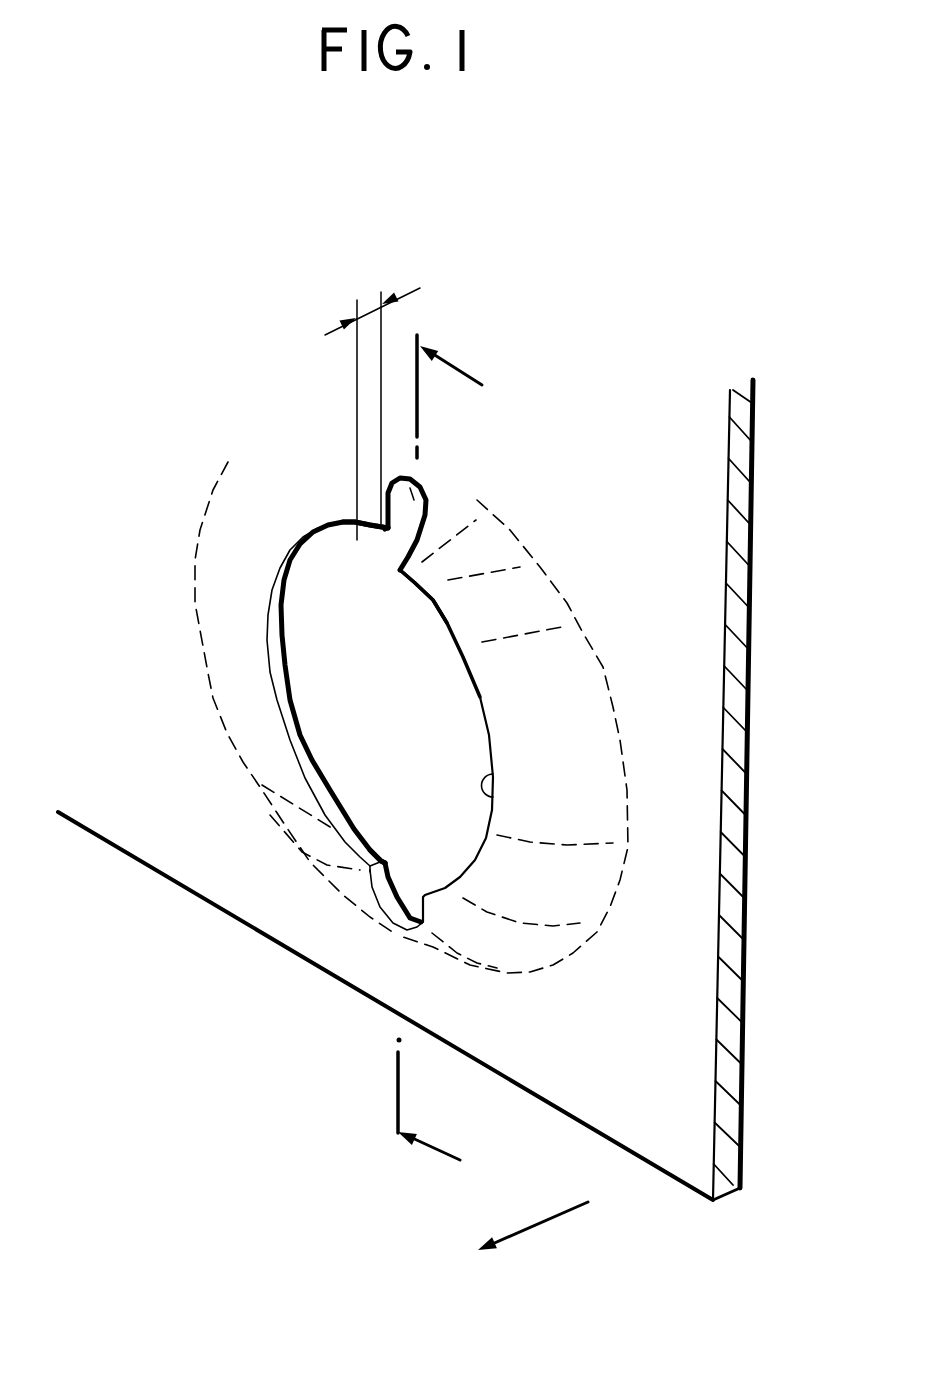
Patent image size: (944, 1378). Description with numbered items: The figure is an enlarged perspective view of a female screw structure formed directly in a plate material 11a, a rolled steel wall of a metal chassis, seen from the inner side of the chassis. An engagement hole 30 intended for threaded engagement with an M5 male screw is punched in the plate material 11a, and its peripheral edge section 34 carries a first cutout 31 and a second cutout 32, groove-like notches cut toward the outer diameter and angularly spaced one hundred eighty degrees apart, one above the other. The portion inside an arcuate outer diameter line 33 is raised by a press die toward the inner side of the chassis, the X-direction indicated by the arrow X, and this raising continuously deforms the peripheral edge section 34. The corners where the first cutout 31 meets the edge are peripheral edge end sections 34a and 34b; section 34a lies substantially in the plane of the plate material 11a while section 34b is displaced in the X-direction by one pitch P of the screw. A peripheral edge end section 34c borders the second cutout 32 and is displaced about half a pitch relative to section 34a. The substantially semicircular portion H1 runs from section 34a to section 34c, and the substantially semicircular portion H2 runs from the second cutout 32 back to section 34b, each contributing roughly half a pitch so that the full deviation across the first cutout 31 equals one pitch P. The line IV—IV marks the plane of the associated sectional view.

The plate material 11a is at (643, 1018).
The engagement hole 30 is at (445, 728).
The first cutout 31 is at (407, 493).
The second cutout 32 is at (408, 898).
The arcuate outer diameter line 33 is at (214, 694).
The peripheral edge section 34 is at (283, 648).
The peripheral edge end section 34a is at (393, 570).
The peripheral edge end section 34b is at (397, 567).
The peripheral edge end section 34c is at (372, 874).
The substantially semicircular portion H1 is at (297, 765).
The substantially semicircular portion H2 is at (495, 798).
The pitch P is at (375, 310).
The section line IV— IV is at (454, 747).
The X-direction X is at (513, 1240).